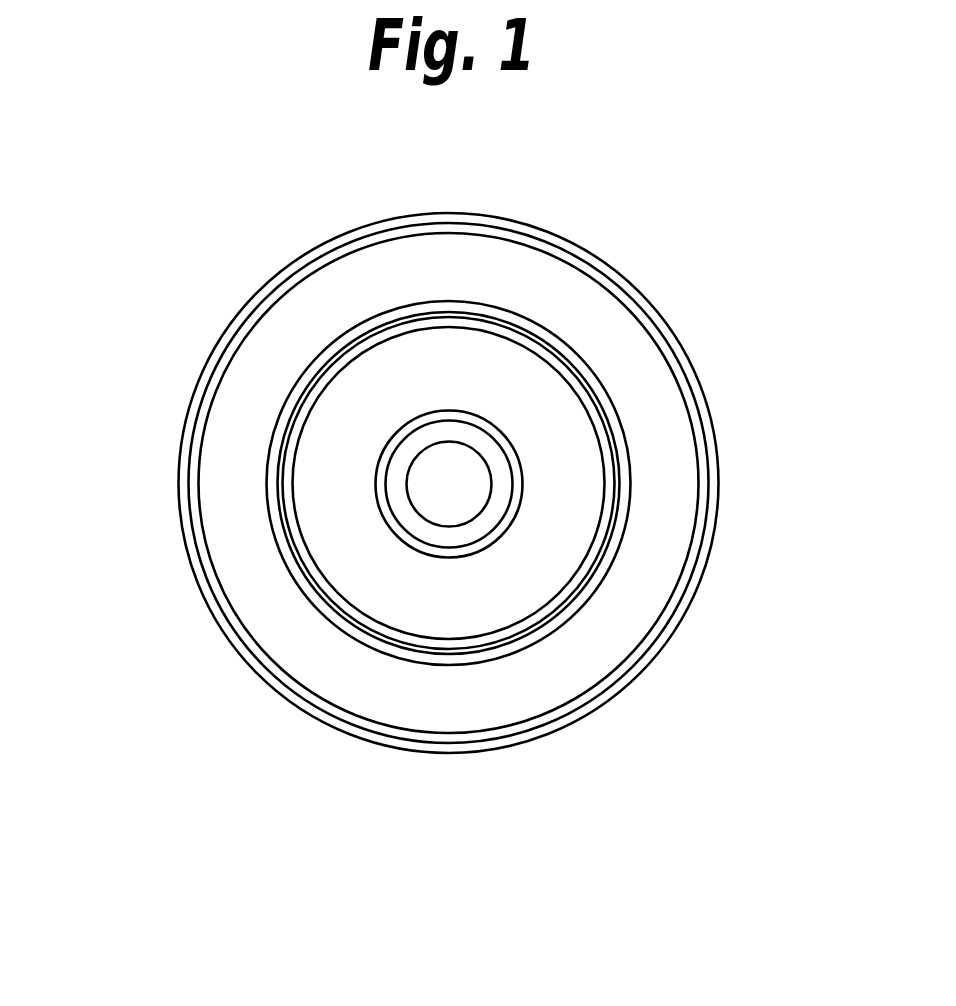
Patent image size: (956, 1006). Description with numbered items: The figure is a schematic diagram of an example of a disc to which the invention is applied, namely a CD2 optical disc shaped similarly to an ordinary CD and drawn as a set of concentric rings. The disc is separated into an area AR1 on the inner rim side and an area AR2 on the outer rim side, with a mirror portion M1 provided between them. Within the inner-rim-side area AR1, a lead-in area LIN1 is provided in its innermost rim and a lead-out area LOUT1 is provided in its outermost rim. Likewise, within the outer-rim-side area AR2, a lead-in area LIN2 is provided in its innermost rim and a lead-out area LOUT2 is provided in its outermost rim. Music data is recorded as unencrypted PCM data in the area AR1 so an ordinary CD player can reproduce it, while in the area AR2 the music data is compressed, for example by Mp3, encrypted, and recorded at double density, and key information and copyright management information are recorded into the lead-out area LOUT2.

The lead-out area LOUT2 is at (450, 735).
The area on the outer rim side AR2 is at (412, 275).
The lead-out area LOUT1 is at (610, 495).
The mirror portion M1 is at (607, 543).
The lead-in area LIN2 is at (577, 603).
The area on the inner rim side AR1 is at (362, 390).
The lead-in area LIN1 is at (505, 440).